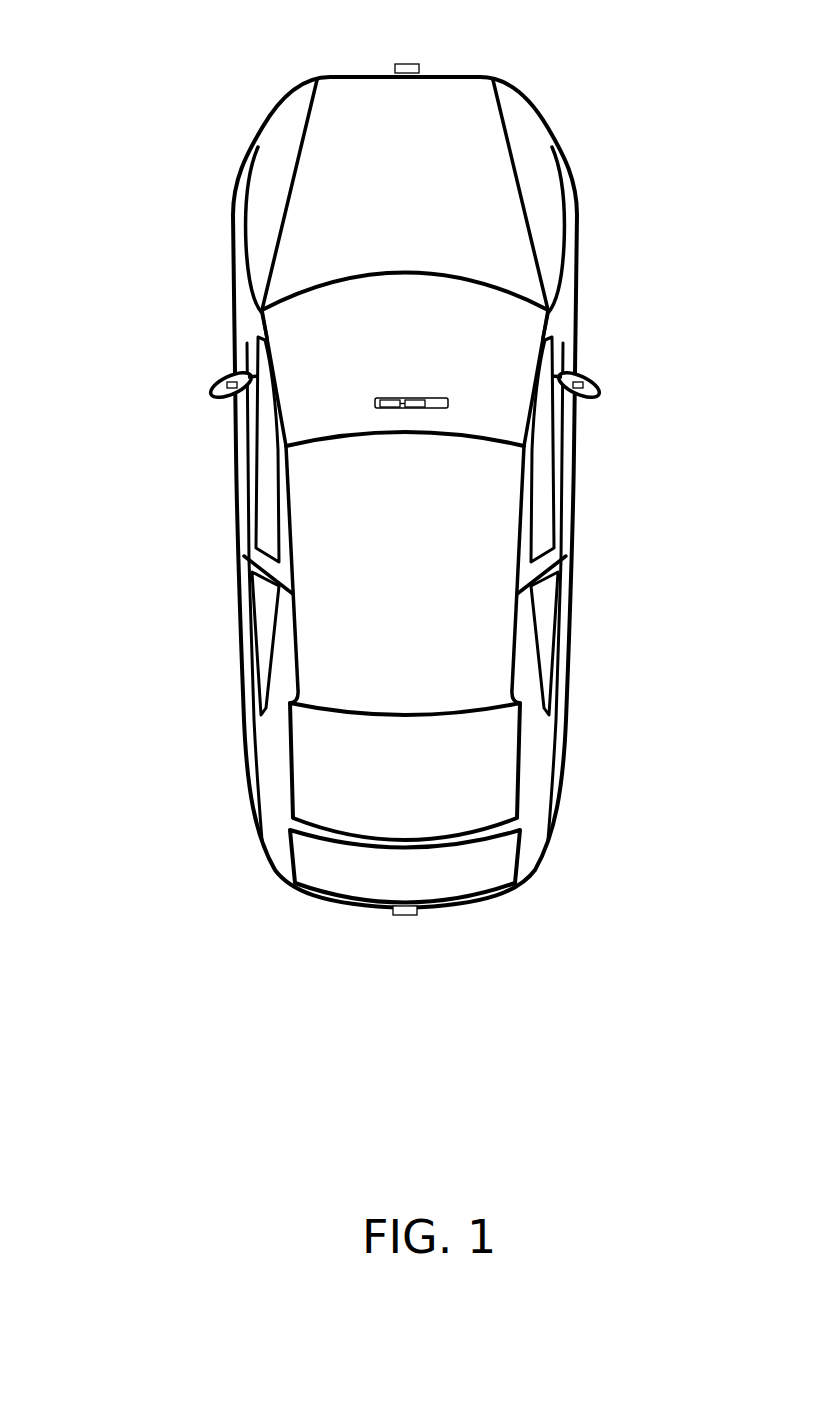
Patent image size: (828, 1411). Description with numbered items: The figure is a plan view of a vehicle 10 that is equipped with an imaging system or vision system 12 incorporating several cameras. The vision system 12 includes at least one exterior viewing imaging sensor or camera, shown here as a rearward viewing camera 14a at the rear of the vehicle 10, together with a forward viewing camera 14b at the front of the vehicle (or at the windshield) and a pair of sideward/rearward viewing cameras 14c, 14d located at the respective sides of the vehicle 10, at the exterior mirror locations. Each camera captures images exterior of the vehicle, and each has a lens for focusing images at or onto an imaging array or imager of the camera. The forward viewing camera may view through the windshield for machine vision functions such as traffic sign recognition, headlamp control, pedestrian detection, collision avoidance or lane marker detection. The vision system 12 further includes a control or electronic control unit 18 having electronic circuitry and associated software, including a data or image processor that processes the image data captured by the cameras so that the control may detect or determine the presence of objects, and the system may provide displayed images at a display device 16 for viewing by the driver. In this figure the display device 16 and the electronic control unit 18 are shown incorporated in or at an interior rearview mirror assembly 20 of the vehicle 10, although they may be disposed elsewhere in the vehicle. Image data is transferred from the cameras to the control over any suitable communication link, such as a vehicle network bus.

The vehicle 10 is at (160, 87).
The vision system 12 is at (367, 923).
The rearward viewing camera 14a is at (412, 915).
The forward viewing camera 14b is at (413, 65).
The sideward/rearward viewing camera 14c is at (217, 381).
The sideward/rearward viewing camera 14d is at (590, 370).
The display device 16 is at (392, 401).
The electronic control unit 18 is at (410, 401).
The interior rearview mirror assembly 20 is at (450, 400).